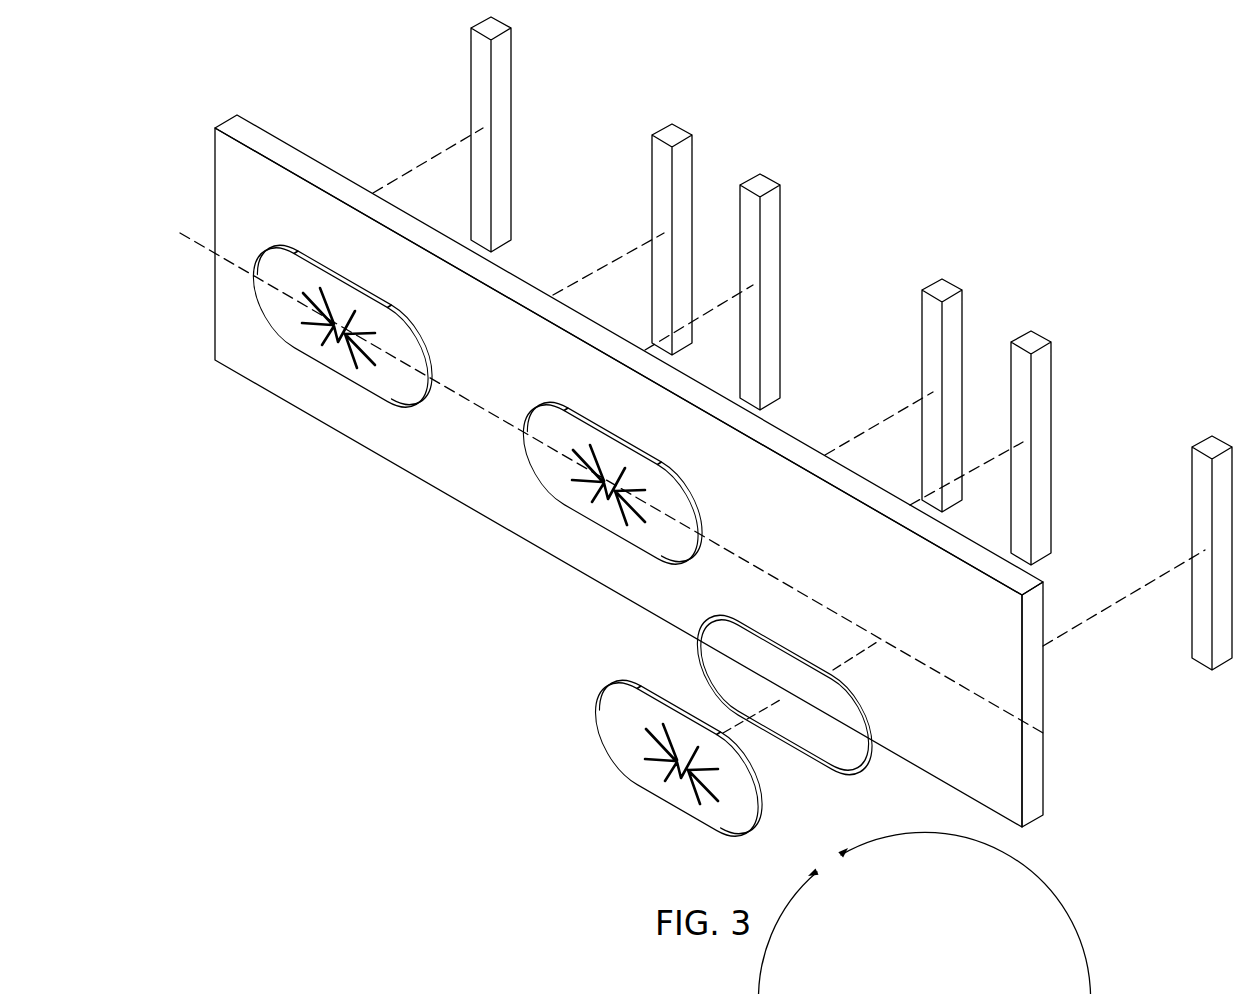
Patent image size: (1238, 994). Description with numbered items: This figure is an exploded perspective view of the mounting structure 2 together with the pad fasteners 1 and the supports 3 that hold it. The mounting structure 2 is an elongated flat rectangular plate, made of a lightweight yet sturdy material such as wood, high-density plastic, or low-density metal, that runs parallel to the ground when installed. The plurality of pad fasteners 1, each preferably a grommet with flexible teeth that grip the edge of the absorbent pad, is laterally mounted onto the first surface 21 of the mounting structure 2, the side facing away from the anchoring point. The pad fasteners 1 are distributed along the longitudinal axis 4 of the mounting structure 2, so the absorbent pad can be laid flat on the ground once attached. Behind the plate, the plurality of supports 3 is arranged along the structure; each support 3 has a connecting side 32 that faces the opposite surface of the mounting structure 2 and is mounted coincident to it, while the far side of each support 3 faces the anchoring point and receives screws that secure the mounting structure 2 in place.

The pad fastener 1 is at (632, 642).
The mounting structure 2 is at (222, 112).
The first surface 21 is at (657, 424).
The support 3 is at (930, 269).
The connecting side 32 is at (1214, 541).
The longitudinal axis 4 is at (175, 229).